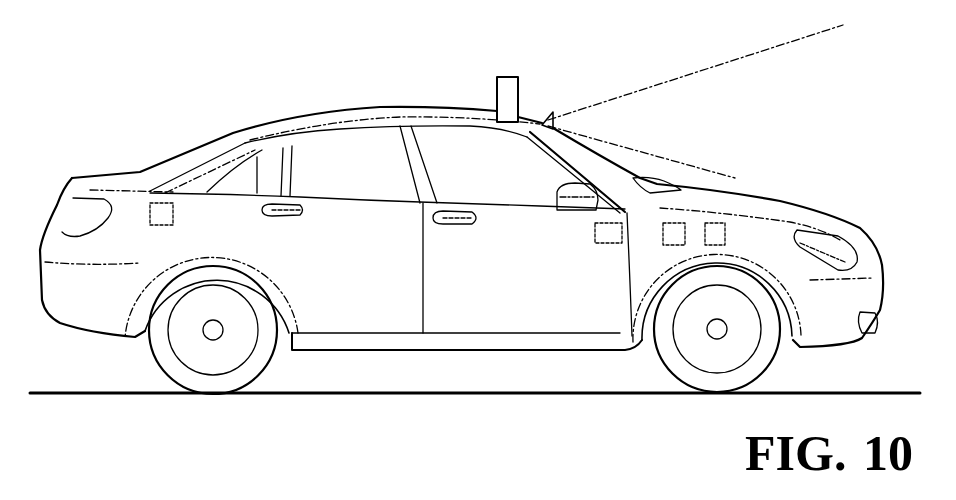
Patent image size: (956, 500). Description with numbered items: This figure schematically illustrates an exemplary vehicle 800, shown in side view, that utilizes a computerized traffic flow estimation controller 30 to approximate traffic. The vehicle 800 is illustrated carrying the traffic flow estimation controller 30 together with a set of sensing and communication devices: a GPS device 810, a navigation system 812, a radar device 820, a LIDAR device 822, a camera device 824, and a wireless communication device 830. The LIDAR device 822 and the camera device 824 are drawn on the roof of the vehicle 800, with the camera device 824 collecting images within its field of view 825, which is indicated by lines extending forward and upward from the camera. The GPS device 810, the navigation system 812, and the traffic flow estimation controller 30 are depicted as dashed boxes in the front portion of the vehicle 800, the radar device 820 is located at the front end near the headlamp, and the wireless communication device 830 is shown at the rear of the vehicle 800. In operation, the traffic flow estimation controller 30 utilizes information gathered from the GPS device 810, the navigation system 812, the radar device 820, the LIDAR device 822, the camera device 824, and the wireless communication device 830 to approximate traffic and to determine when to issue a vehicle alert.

The vehicle 800 is at (260, 124).
The GPS device 810 is at (660, 236).
The navigation system 812 is at (595, 233).
The radar device 820 is at (866, 251).
The LIDAR device 822 is at (505, 95).
The camera device 824 is at (546, 122).
The field of view 825 is at (707, 93).
The wireless communication device 830 is at (165, 201).
The traffic flow estimation controller 30 is at (727, 236).